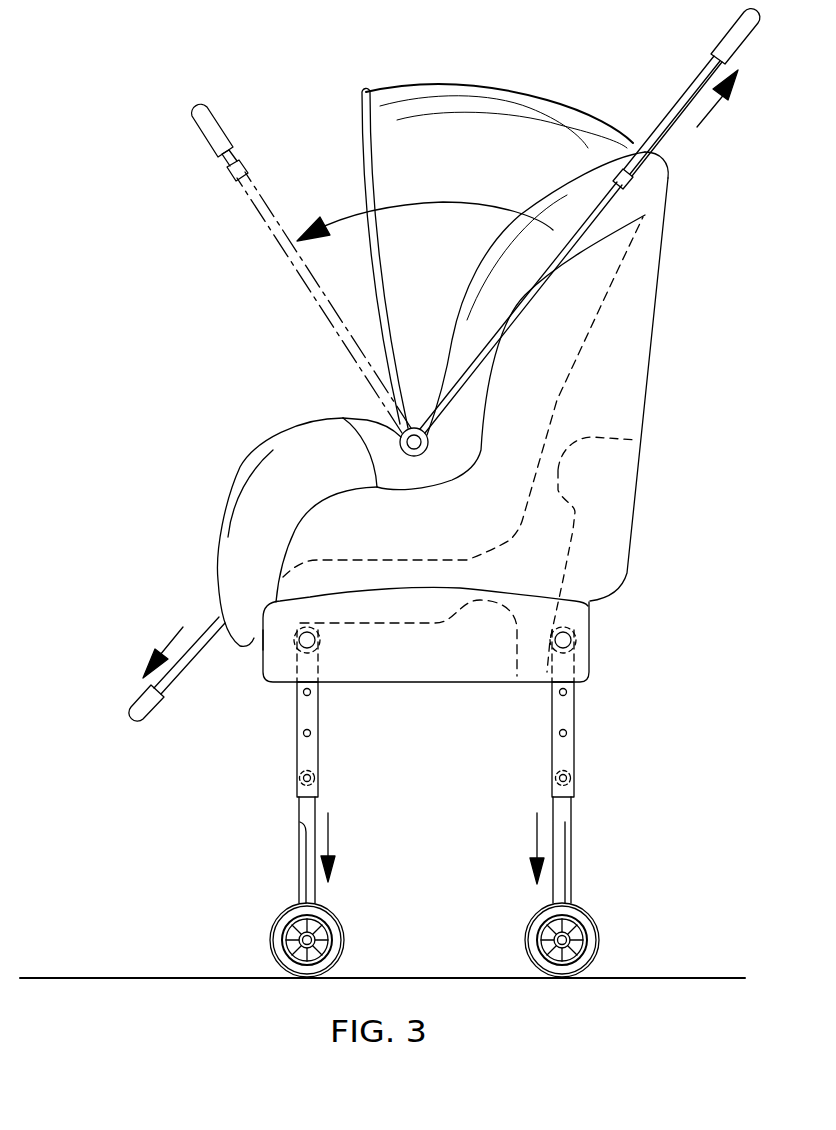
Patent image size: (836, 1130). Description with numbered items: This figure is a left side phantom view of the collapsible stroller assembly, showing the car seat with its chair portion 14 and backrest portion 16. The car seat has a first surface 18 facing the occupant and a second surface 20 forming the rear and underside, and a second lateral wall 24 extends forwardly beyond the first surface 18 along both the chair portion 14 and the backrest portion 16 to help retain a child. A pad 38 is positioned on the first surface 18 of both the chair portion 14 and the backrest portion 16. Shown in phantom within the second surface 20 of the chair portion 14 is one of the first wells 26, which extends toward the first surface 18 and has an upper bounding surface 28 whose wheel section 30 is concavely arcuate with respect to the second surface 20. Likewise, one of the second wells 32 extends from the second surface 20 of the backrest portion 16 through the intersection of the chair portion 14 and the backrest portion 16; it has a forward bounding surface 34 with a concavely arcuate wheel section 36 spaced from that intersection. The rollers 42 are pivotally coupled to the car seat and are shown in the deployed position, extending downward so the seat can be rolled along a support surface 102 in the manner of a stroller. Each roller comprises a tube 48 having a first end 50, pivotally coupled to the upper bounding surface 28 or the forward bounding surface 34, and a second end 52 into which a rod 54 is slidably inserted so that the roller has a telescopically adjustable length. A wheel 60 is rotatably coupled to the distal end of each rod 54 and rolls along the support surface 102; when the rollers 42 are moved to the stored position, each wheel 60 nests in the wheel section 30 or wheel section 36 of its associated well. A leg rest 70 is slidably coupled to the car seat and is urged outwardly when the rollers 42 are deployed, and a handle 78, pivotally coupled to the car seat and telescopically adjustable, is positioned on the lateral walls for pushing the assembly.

The chair portion 14 is at (258, 652).
The backrest portion 16 is at (652, 313).
The first surface 18 is at (553, 430).
The second surface 20 is at (648, 396).
The second lateral wall 24 is at (343, 417).
The first wells 26 is at (432, 690).
The upper bounding surface 28 is at (377, 627).
The wheel section 30 is at (493, 606).
The second wells 32 is at (608, 557).
The forward bounding surface 34 is at (565, 570).
The wheel section 36 is at (558, 468).
The pad 38 is at (233, 490).
The rollers 42 is at (492, 896).
The tube 48 is at (297, 760).
The first end 50 is at (300, 645).
The second end 52 is at (300, 826).
The rod 54 is at (299, 875).
The wheel 60 is at (345, 941).
The leg rest 70 is at (165, 633).
The handle 78 is at (646, 91).
The ground surface 102 is at (66, 976).